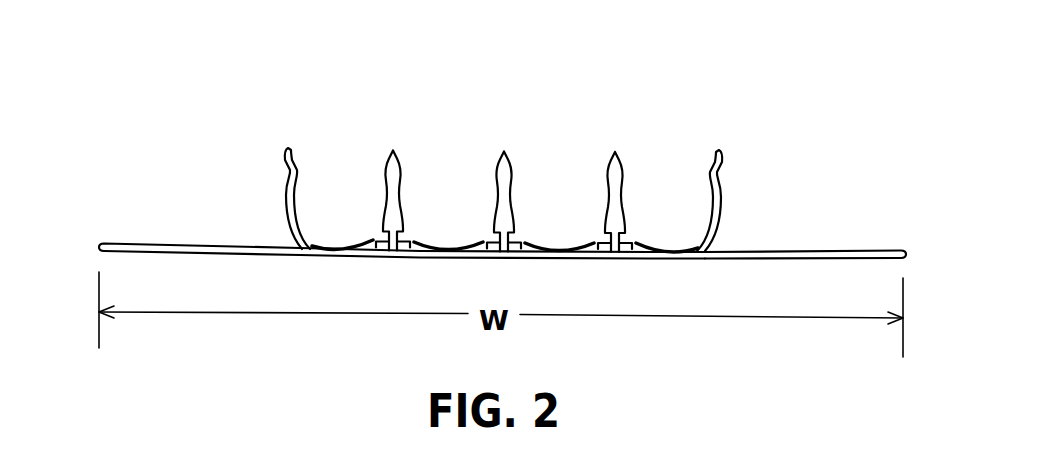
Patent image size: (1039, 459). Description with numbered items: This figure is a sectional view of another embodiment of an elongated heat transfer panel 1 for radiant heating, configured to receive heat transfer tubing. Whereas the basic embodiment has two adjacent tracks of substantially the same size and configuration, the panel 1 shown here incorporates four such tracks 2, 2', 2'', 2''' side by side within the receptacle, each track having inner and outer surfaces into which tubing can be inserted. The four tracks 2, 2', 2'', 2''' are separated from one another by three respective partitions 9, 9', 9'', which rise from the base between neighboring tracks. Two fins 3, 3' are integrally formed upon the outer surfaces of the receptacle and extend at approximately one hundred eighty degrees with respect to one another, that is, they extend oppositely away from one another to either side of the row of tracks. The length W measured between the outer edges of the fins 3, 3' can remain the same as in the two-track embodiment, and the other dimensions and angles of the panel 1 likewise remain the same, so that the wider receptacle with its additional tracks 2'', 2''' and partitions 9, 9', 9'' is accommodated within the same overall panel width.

The heat transfer panel 1 is at (260, 178).
The track 2 is at (342, 153).
The track 2' is at (449, 154).
The track 2'' is at (559, 154).
The track 2''' is at (670, 155).
The fin 3 is at (157, 183).
The fin 3' is at (866, 189).
The partition 9 is at (409, 125).
The partition 9' is at (523, 126).
The partition 9'' is at (629, 126).